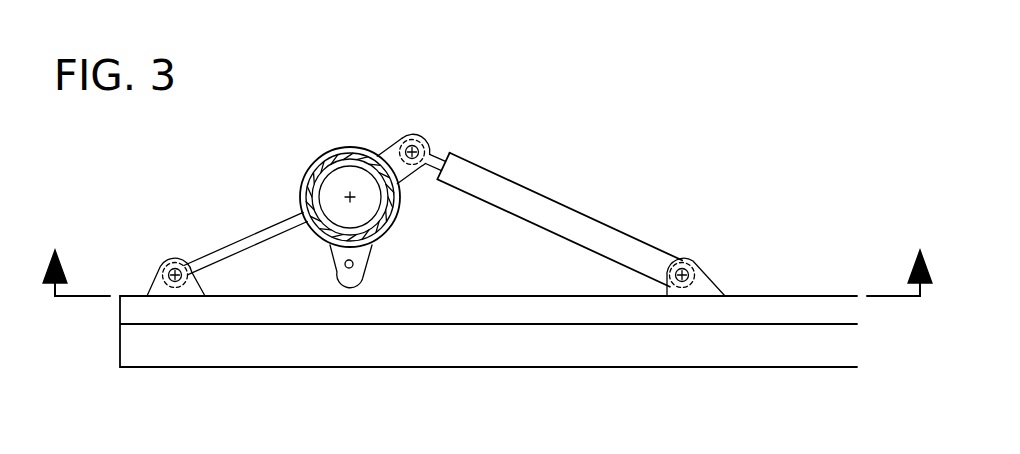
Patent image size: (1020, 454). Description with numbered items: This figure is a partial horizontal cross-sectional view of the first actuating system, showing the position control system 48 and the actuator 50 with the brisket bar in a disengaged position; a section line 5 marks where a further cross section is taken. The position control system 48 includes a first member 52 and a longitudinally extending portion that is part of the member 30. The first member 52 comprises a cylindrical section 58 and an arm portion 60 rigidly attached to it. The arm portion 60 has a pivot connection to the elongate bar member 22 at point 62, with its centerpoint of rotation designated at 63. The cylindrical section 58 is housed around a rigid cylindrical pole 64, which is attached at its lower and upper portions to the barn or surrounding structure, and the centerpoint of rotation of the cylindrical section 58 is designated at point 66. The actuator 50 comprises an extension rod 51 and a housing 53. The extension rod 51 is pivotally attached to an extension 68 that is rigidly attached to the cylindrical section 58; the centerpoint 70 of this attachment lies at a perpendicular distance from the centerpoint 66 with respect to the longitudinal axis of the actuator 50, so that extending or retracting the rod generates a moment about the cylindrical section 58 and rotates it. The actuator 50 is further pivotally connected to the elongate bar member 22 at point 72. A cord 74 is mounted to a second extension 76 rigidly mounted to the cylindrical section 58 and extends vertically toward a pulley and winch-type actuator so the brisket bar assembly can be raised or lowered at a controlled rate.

The section line 5- 5 is at (487, 260).
The elongate bar member 22 is at (463, 353).
The member 30 is at (473, 308).
The position control system 48 is at (318, 160).
The actuator 50 is at (590, 222).
The extension rod 51 is at (440, 155).
The first member 52 is at (232, 244).
The housing 53 is at (608, 228).
The cylindrical section 58 is at (302, 190).
The arm portion 60 is at (210, 253).
The pivot connection point 62 is at (170, 268).
The centerpoint of rotation 63 is at (160, 268).
The rigid cylindrical pole 64 is at (308, 175).
The centerpoint of rotation 66 is at (348, 198).
The extension 68 is at (385, 153).
The centerpoint 70 is at (405, 145).
The pivot point 72 is at (695, 265).
The cord 74 is at (357, 257).
The extension 76 is at (358, 265).